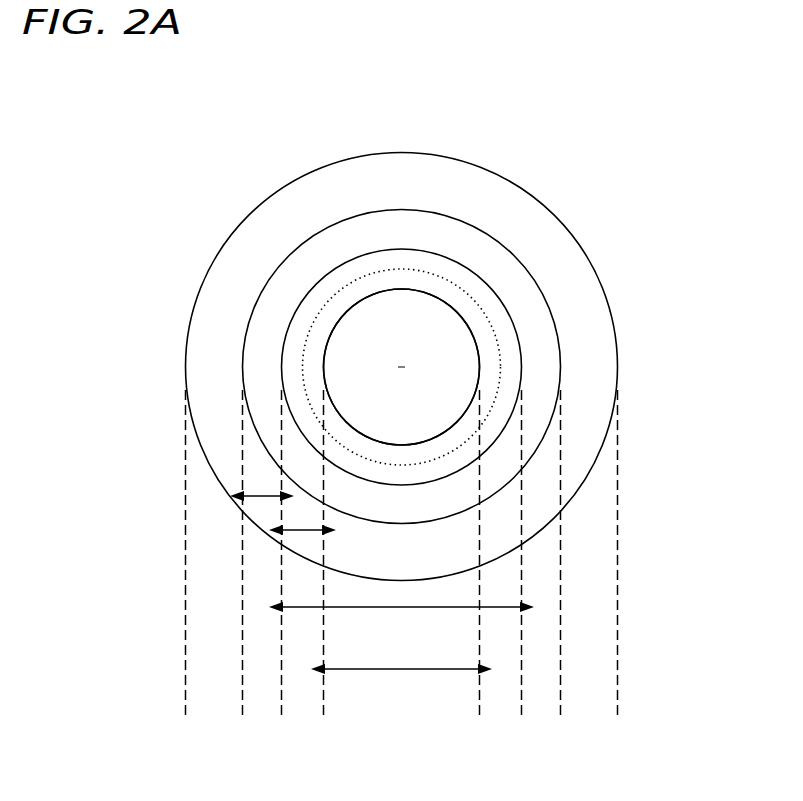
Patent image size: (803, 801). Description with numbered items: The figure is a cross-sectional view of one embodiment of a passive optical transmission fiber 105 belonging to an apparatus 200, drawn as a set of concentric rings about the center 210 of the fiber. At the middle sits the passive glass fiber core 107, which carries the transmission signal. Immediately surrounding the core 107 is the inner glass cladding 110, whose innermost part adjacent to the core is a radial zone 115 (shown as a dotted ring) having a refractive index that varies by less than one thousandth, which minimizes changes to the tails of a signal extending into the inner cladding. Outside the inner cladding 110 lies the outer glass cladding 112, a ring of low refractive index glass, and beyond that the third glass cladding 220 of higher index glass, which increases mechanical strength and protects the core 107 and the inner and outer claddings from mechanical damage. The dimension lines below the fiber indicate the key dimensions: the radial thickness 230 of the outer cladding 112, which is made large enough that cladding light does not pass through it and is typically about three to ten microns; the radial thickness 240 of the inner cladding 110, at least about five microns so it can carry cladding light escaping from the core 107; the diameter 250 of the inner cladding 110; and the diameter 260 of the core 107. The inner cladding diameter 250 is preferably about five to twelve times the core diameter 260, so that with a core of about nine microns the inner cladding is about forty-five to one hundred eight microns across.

The apparatus 200 is at (507, 101).
The passive optical transmission fiber 105 is at (150, 162).
The passive glass fiber core 107 is at (422, 310).
The inner glass cladding 110 is at (492, 308).
The radial zone 115 is at (485, 343).
The outer glass cladding 112 is at (540, 355).
The center 210 is at (388, 365).
The third glass cladding 220 is at (215, 348).
The radial thickness 230 is at (262, 498).
The radial thickness 240 is at (303, 532).
The diameter 250 is at (401, 686).
The diameter 260 is at (401, 624).